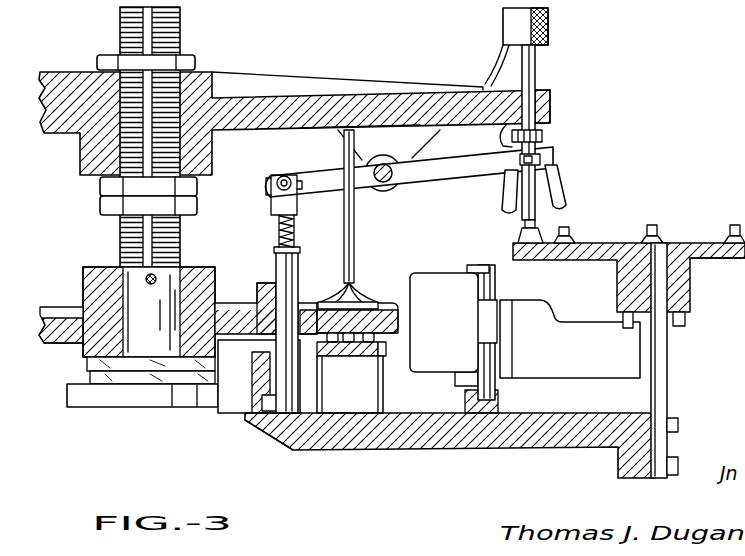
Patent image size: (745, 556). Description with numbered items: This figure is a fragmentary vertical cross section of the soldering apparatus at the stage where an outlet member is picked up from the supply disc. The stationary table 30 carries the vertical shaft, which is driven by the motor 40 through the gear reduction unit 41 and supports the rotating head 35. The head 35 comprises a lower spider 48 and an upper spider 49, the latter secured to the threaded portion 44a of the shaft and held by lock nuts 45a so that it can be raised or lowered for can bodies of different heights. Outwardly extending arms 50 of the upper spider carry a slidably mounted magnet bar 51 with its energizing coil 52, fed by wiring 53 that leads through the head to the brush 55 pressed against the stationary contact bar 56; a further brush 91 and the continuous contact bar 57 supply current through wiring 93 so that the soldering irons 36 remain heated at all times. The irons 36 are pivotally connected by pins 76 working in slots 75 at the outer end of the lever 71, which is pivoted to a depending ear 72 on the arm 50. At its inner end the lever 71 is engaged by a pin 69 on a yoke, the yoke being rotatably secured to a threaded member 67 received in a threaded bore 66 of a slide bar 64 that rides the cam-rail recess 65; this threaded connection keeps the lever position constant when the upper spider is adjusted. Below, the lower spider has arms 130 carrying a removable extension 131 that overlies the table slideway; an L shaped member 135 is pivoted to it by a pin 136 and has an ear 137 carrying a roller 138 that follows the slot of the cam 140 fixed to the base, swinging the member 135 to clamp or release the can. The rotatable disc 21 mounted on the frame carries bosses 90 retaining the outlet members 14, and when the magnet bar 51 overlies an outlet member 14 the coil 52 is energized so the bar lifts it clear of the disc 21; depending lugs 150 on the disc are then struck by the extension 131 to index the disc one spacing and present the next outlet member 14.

The outlet member 14 is at (568, 228).
The rotatable disc 21 is at (710, 250).
The table 30 is at (588, 432).
The rotating head 35 is at (285, 105).
The soldering irons 36 is at (504, 188).
The motor 40 is at (155, 337).
The gear reduction unit 41 is at (458, 105).
The threaded portion of the shaft 44a is at (178, 21).
The nut 45a is at (190, 68).
The spider 48 is at (235, 322).
The spider 49 is at (352, 118).
The arms 50 is at (550, 98).
The magnet bar 51 is at (537, 70).
The energizing coil 52 is at (549, 22).
The wiring 53 is at (343, 149).
The brush 55 is at (380, 349).
The stationary contact bar 56 is at (345, 357).
The stationary contact bar 57 is at (373, 357).
The slide bars 64 is at (288, 272).
The recess 65 is at (272, 412).
The threaded bores 66 is at (248, 423).
The threaded members 67 is at (252, 373).
The pins 69 is at (284, 177).
The lever 71 is at (470, 166).
The depending ears 72 is at (389, 159).
The slots 75 is at (545, 156).
The pins 76 is at (520, 161).
The bosses 90 is at (515, 248).
The brush 91 is at (311, 330).
The wiring 93 is at (508, 140).
The arms 130 is at (392, 302).
The extension 131 is at (570, 339).
The L shaped member 135 is at (444, 322).
The pin 136 is at (480, 268).
The ear 137 is at (465, 376).
The roller 138 is at (495, 386).
The cam 140 is at (498, 404).
The depending lugs 150 is at (624, 318).